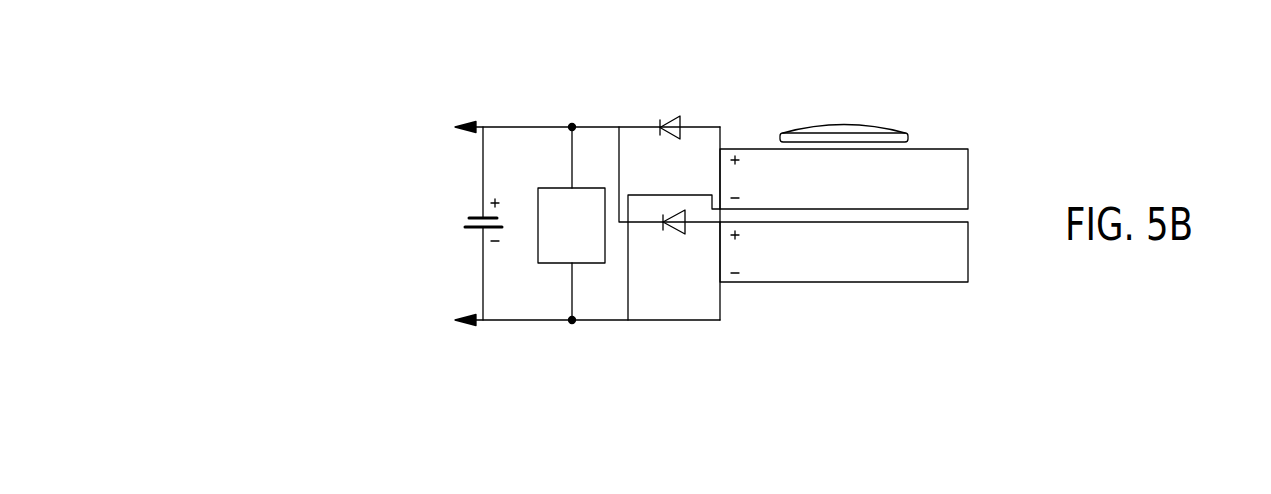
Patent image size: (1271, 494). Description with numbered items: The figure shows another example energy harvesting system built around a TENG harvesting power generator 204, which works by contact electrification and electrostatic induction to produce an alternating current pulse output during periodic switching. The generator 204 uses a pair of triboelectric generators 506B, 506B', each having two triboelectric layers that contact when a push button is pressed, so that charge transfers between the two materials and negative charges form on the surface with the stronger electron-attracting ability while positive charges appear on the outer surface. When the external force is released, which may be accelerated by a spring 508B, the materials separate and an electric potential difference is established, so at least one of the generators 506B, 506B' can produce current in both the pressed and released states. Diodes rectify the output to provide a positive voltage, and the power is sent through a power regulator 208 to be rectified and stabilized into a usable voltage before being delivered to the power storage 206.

The TENG harvesting power generator 204 is at (1114, 85).
The power storage 206 is at (476, 228).
The power regulator 208 is at (752, 327).
The triboelectric generator 506B is at (815, 142).
The triboelectric generator 506B' is at (865, 281).
The spring 508B is at (906, 145).